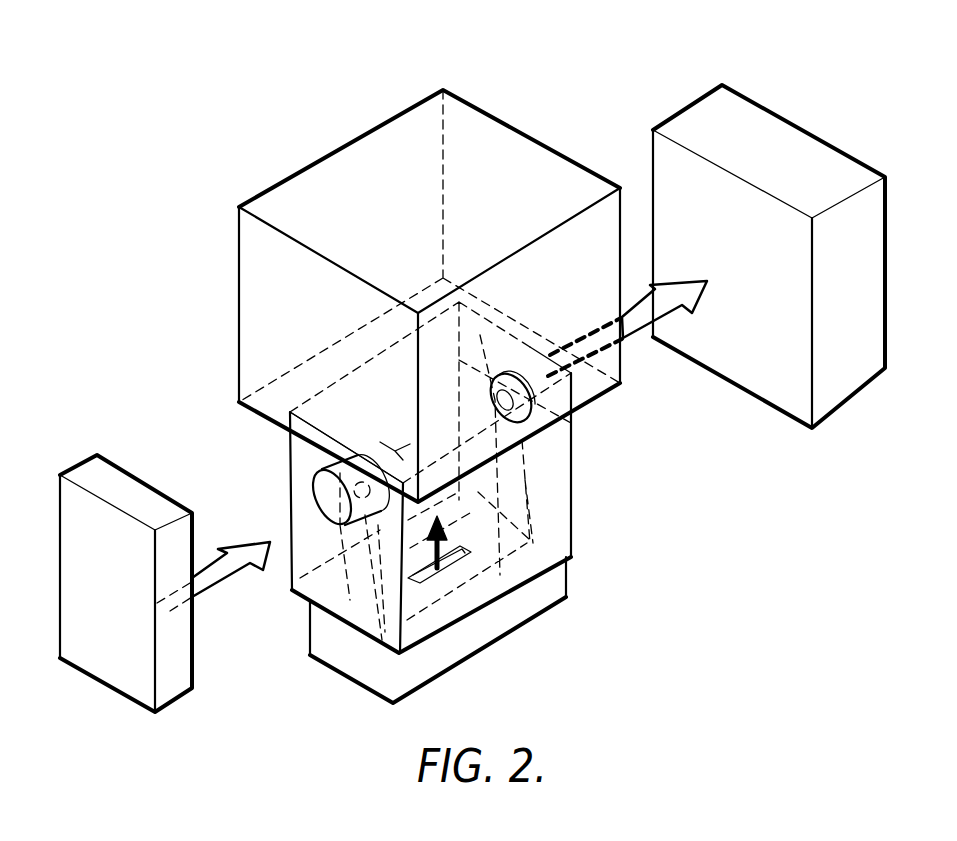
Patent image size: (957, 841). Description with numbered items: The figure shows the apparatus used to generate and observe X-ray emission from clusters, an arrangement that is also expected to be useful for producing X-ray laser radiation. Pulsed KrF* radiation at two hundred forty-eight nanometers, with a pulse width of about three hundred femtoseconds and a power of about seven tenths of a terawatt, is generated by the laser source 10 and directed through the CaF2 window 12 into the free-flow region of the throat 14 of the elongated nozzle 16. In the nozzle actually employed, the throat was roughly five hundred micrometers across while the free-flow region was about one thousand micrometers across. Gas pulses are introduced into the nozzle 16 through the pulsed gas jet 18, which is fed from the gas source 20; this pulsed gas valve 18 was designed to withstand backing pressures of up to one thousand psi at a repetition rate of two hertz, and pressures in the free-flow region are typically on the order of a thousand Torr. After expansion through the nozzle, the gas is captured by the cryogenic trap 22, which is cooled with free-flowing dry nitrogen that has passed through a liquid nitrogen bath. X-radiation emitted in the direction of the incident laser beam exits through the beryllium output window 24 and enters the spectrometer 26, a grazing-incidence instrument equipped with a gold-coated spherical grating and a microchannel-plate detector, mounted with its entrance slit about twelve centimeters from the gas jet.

The laser source 10 is at (117, 592).
The CaF2 window 12 is at (316, 482).
The throat 14 is at (425, 445).
The elongated nozzle 16 is at (362, 568).
The pulsed gas jet 18 is at (462, 570).
The gas source 20 is at (354, 660).
The cryogenic trap 22 is at (492, 104).
The beryllium output window 24 is at (530, 418).
The spectrometer 26 is at (741, 259).